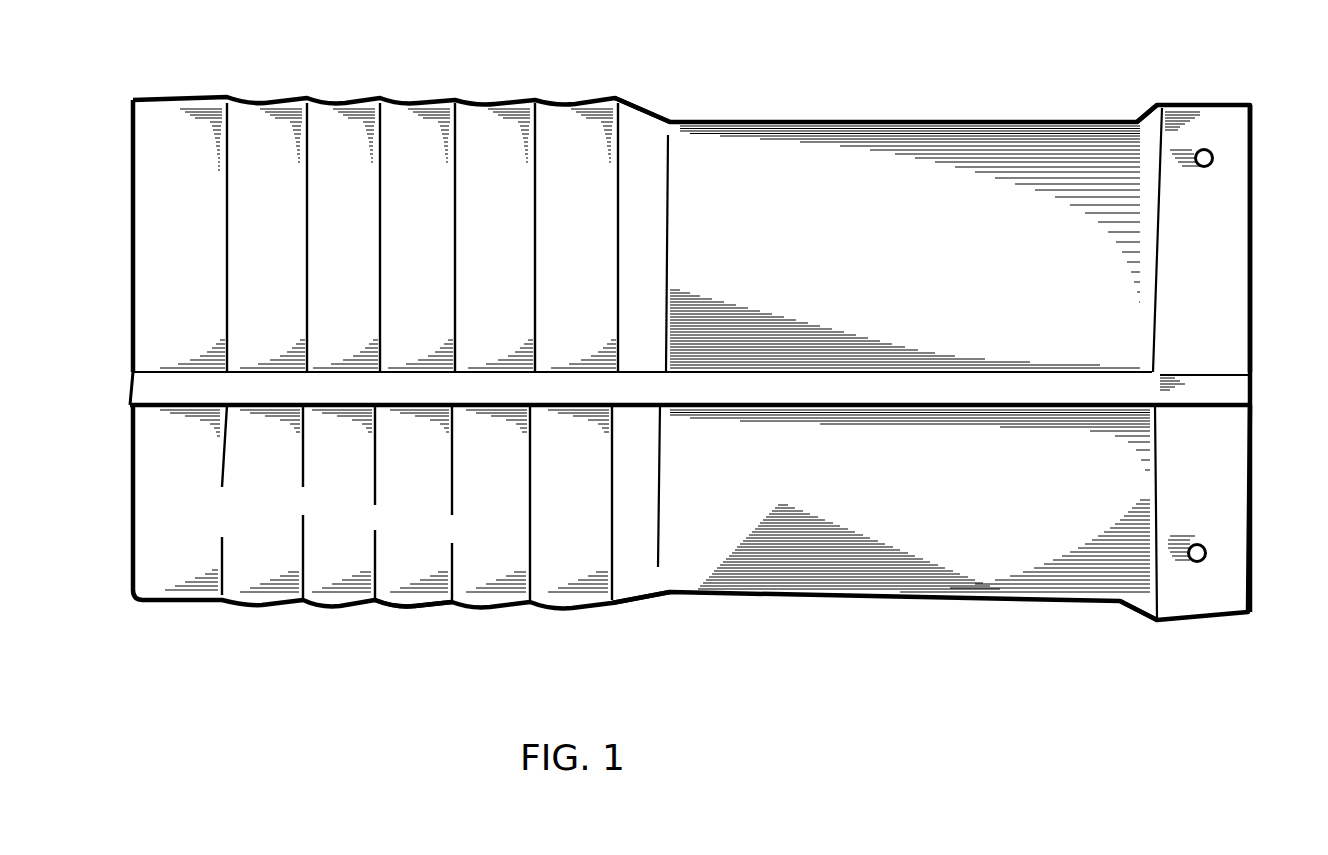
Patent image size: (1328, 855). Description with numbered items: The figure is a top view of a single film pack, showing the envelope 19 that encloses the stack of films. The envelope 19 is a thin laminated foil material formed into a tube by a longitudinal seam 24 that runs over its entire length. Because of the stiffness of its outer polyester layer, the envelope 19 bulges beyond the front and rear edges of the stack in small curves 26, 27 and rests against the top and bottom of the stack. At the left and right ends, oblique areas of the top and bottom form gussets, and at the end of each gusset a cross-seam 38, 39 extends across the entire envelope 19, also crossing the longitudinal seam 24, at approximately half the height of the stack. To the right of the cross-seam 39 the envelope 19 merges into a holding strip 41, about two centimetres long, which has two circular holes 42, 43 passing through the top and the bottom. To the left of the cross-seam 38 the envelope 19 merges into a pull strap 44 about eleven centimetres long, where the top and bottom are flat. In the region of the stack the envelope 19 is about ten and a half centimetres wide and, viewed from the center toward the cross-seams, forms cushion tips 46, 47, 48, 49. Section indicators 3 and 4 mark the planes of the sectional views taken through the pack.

The envelope 19 is at (405, 603).
The longitudinal seam 24 is at (1200, 376).
The small curve 26 is at (986, 120).
The small curve 27 is at (958, 603).
The cross-seam 38 is at (614, 185).
The cross-seam 39 is at (1166, 146).
The holding strip 41 is at (1213, 478).
The hole 42 is at (1216, 165).
The hole 43 is at (1210, 545).
The pull strap 44 is at (176, 160).
The cushion tip 46 is at (648, 604).
The cushion tip 47 is at (647, 110).
The cushion tip 48 is at (1138, 120).
The cushion tip 49 is at (1140, 618).
The section line 3- 3 is at (248, 303).
The section line 4- 4 is at (777, 178).